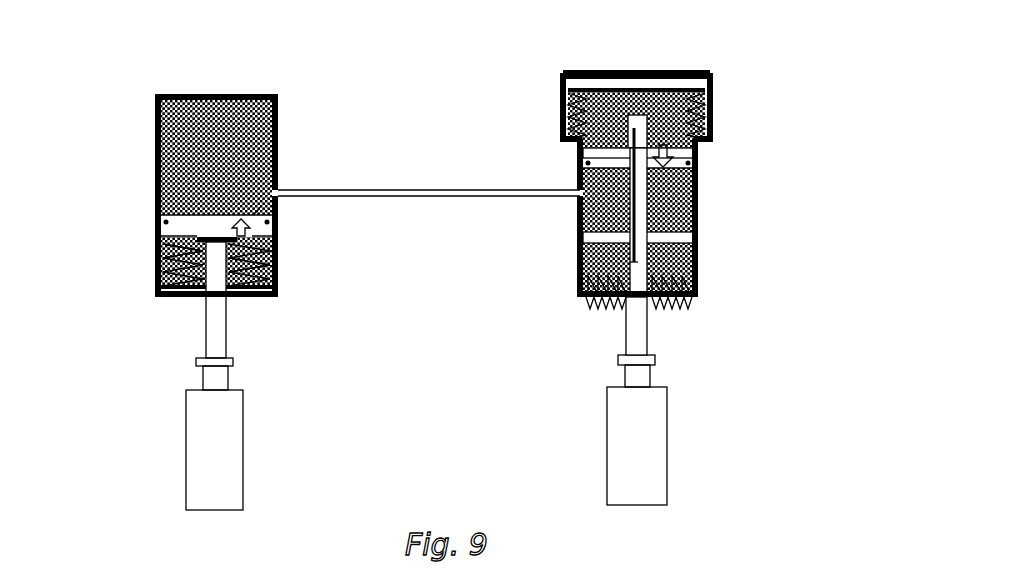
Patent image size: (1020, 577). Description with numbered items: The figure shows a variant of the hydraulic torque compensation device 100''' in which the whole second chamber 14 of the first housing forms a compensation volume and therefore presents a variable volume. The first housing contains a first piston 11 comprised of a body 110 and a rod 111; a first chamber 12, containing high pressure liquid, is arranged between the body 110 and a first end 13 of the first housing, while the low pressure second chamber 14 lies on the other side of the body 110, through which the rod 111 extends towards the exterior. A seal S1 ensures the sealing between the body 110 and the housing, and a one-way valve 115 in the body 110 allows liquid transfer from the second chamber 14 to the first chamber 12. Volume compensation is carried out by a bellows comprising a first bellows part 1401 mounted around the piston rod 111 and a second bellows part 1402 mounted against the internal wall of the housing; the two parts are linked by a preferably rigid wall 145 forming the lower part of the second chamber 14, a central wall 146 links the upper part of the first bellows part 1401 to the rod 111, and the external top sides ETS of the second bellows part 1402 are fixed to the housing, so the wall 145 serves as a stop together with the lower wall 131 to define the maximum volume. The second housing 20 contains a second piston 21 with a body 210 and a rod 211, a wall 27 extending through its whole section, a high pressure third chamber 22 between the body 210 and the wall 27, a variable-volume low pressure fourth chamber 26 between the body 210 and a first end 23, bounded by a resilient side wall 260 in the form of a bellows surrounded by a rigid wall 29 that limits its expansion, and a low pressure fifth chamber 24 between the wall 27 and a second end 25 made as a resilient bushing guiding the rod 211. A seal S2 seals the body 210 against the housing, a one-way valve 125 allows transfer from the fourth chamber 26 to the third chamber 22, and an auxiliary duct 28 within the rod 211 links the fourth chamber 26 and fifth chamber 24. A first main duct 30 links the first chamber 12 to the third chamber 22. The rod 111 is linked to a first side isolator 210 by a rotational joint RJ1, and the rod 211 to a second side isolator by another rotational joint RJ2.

The first end of the first housing 13 is at (201, 91).
The first chamber 12 is at (250, 130).
The one-way valve 115 is at (244, 212).
The first piston 11 is at (204, 212).
The central wall 146 is at (205, 237).
The external top sides ETS is at (155, 241).
The second bellows part 1402 is at (160, 263).
The first bellows part 1401 is at (163, 296).
The rotational joint RJ1 is at (204, 353).
The first side isolator 210 is at (212, 512).
The seal S1 is at (283, 222).
The body of the first piston 110 is at (279, 240).
The second chamber 14 is at (279, 279).
The wall 145 is at (276, 298).
The lower wall of the first housing 131 is at (247, 307).
The rod of the first piston 111 is at (236, 350).
The first main duct 30 is at (439, 187).
The fourth chamber 26 is at (601, 113).
The rigid wall 29 is at (629, 72).
The first end of the second housing 23 is at (683, 78).
The hydraulic torque compensation device 100''' is at (710, 56).
The resilient side wall 260 is at (574, 105).
The second piston 21 is at (613, 163).
The auxiliary duct 28 is at (623, 191).
The third chamber 22 is at (604, 214).
The fifth chamber 24 is at (599, 265).
The seal S2 is at (700, 150).
The one-way valve 125 is at (700, 176).
The second housing 20 is at (722, 198).
The rod of the second piston 211 is at (700, 240).
The wall 27 is at (700, 265).
The second end of the second housing 25 is at (679, 310).
The rotational joint RJ2 is at (621, 350).